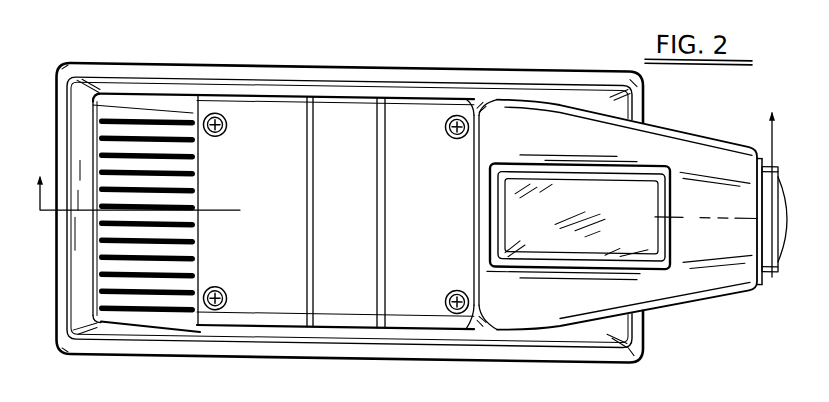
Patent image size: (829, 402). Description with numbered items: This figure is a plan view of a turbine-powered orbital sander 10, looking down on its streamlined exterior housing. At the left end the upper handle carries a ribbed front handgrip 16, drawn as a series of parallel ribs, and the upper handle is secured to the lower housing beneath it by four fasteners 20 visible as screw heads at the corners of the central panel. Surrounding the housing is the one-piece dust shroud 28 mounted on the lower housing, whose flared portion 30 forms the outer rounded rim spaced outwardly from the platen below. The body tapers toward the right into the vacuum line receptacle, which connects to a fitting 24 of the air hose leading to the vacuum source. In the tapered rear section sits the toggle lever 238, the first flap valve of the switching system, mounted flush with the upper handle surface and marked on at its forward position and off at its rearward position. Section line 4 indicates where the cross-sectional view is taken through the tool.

The turbine-powered orbital sander 10 is at (406, 207).
The ribbed front handgrip 16 is at (92, 118).
The fasteners 20 is at (216, 109).
The fitting 24 is at (772, 265).
The dust shroud 28 is at (104, 322).
The flared portion 30 is at (80, 346).
The toggle lever 238 is at (622, 190).
The section line 4- 4 is at (403, 179).